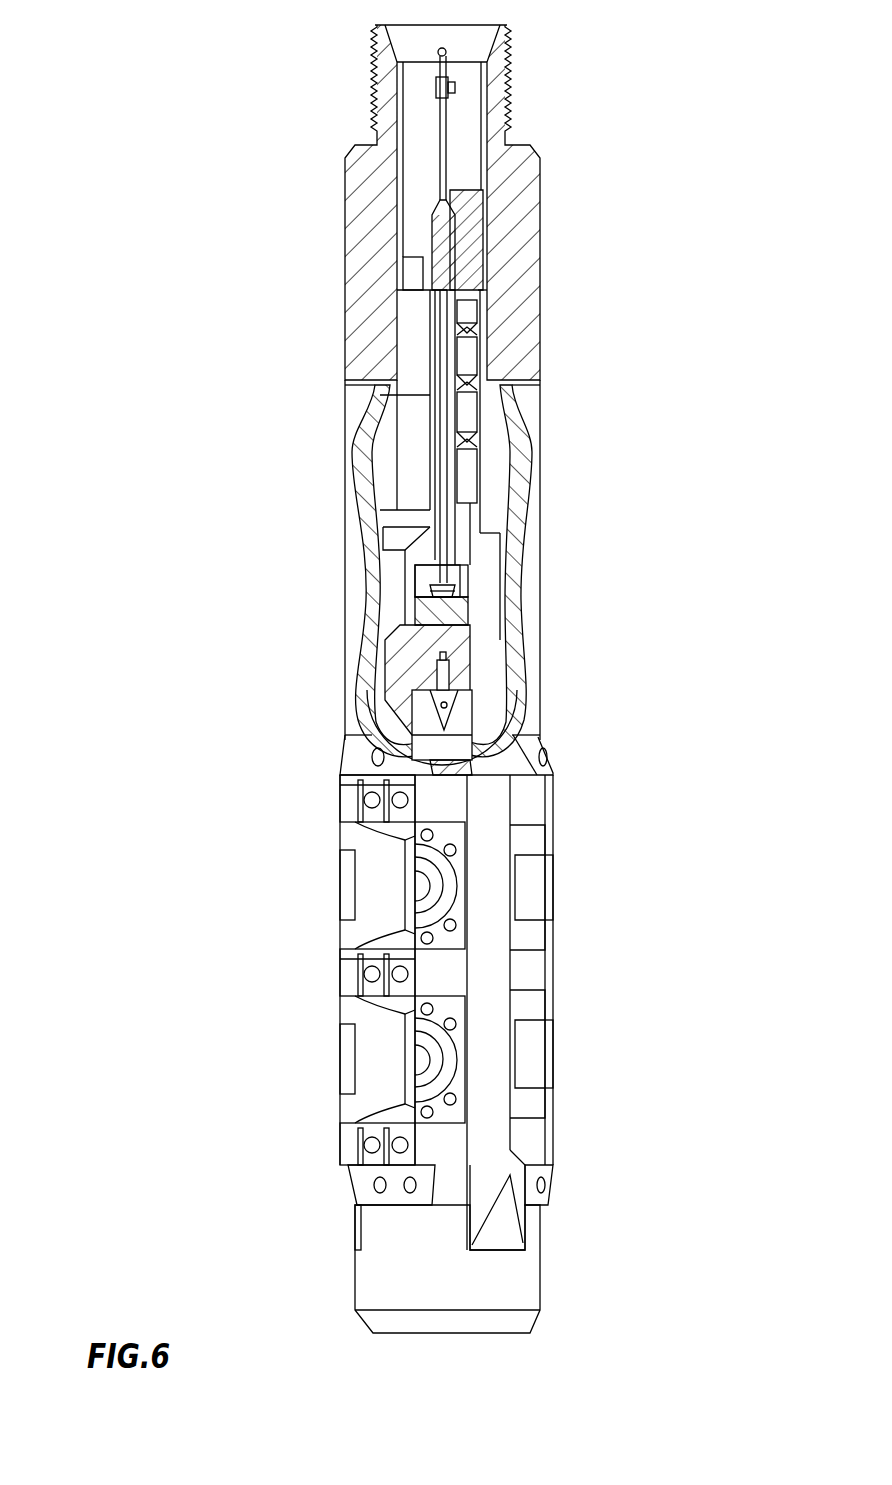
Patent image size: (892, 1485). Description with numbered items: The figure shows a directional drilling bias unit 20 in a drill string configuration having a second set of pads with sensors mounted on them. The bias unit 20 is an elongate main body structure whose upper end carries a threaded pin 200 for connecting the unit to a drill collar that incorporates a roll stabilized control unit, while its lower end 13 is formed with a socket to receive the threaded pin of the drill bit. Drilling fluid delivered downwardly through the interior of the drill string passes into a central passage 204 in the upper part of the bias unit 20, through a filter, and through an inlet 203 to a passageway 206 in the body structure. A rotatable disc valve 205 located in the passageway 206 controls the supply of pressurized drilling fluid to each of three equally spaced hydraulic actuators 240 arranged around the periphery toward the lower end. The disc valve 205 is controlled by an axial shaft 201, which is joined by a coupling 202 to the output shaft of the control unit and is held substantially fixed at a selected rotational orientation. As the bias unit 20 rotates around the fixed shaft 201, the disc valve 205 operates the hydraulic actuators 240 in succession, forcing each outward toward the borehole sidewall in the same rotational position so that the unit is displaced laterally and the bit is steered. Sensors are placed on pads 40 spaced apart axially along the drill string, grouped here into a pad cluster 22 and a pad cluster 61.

The directional drilling bias unit 20 is at (724, 190).
The threaded pin 200 is at (512, 118).
The axial shaft 201 is at (438, 165).
The coupling 202 is at (452, 88).
The inlet 203 is at (480, 298).
The central passage 204 is at (412, 336).
The rotatable disc valve 205 is at (418, 584).
The passageway 206 is at (392, 656).
The pad 40 is at (352, 933).
The pad cluster 61 is at (660, 970).
The pad cluster 22 is at (658, 1152).
The hydraulic actuator 240 is at (545, 933).
The lower end 13 is at (372, 1280).